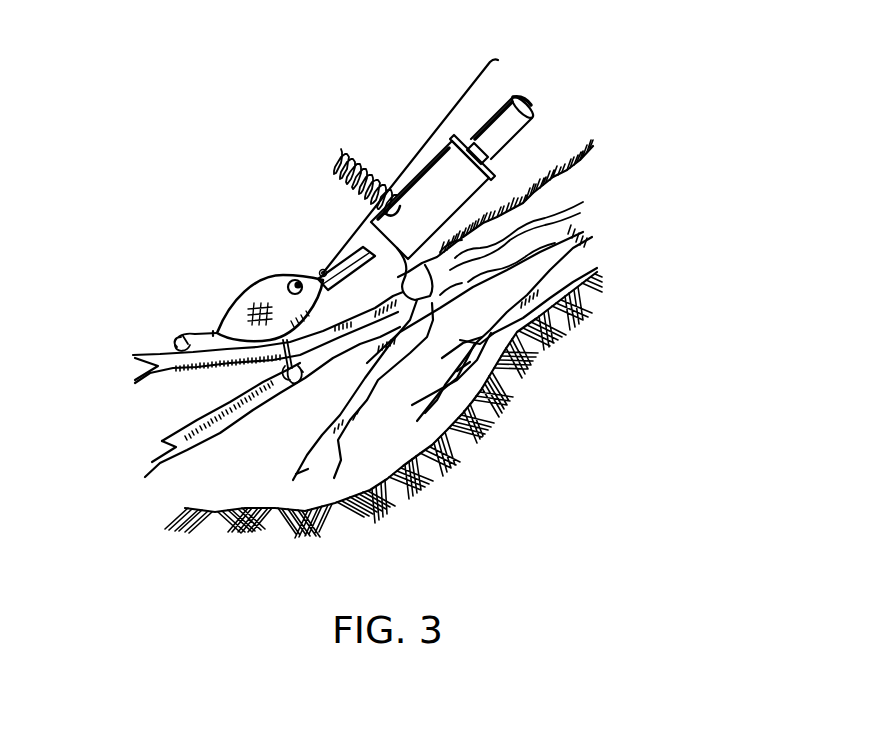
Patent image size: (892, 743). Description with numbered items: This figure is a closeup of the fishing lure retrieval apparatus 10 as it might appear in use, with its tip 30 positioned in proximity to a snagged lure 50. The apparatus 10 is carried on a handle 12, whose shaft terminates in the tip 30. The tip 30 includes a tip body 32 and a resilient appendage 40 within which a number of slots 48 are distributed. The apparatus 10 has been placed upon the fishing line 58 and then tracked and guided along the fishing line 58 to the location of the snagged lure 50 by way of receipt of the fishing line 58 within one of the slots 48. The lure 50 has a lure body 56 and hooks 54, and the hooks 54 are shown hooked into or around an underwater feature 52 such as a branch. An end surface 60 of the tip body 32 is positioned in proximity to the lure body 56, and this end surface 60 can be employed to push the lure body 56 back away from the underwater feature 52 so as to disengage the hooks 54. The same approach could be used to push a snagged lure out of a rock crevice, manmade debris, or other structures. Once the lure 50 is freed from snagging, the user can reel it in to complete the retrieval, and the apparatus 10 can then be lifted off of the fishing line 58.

The fishing lure retrieval apparatus 10 is at (509, 172).
The handle 12 is at (531, 110).
The tip 30 is at (487, 203).
The tip body 32 is at (370, 230).
The resilient appendage 40 is at (336, 172).
The slots 48 is at (393, 200).
The lure 50 is at (249, 278).
The underwater feature 52 is at (416, 338).
The hooks 54 is at (167, 337).
The lure body 56 is at (237, 315).
The fishing line 58 is at (479, 85).
The end surface 60 is at (395, 248).